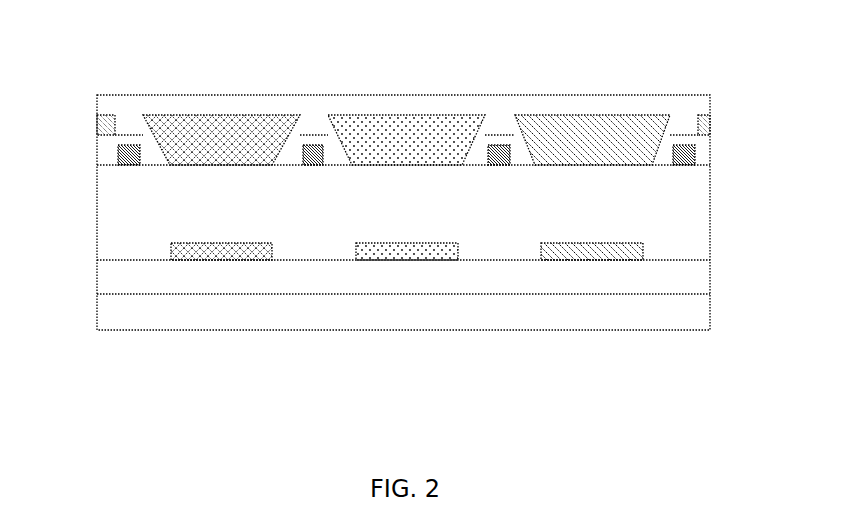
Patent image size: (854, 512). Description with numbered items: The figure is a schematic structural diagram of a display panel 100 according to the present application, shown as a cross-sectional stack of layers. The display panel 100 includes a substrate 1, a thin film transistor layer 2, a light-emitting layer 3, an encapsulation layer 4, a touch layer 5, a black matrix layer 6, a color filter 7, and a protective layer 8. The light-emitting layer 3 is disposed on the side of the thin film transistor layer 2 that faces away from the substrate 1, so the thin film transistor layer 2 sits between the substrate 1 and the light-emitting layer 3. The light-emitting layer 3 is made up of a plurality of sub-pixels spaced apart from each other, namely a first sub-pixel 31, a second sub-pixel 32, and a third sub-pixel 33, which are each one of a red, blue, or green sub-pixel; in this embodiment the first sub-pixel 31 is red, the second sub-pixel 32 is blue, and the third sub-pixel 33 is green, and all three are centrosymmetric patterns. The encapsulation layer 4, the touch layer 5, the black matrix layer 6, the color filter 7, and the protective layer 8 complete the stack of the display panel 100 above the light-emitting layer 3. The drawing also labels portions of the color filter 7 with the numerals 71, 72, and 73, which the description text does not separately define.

The display panel 100 is at (83, 72).
The substrate 1 is at (425, 297).
The thin film transistor layer 2 is at (425, 264).
The light-emitting layer 3 is at (450, 355).
The first sub-pixel 31 is at (256, 300).
The second sub-pixel 32 is at (407, 300).
The third sub-pixel 33 is at (528, 300).
The encapsulation layer 4 is at (425, 212).
The touch layer 5 is at (685, 145).
The black matrix layer 6 is at (675, 141).
The color filter 7 is at (535, 40).
The first light emitting unit 71 is at (282, 104).
The second light emitting unit 72 is at (406, 104).
The third light emitting unit 73 is at (586, 104).
The protective layer 8 is at (403, 94).